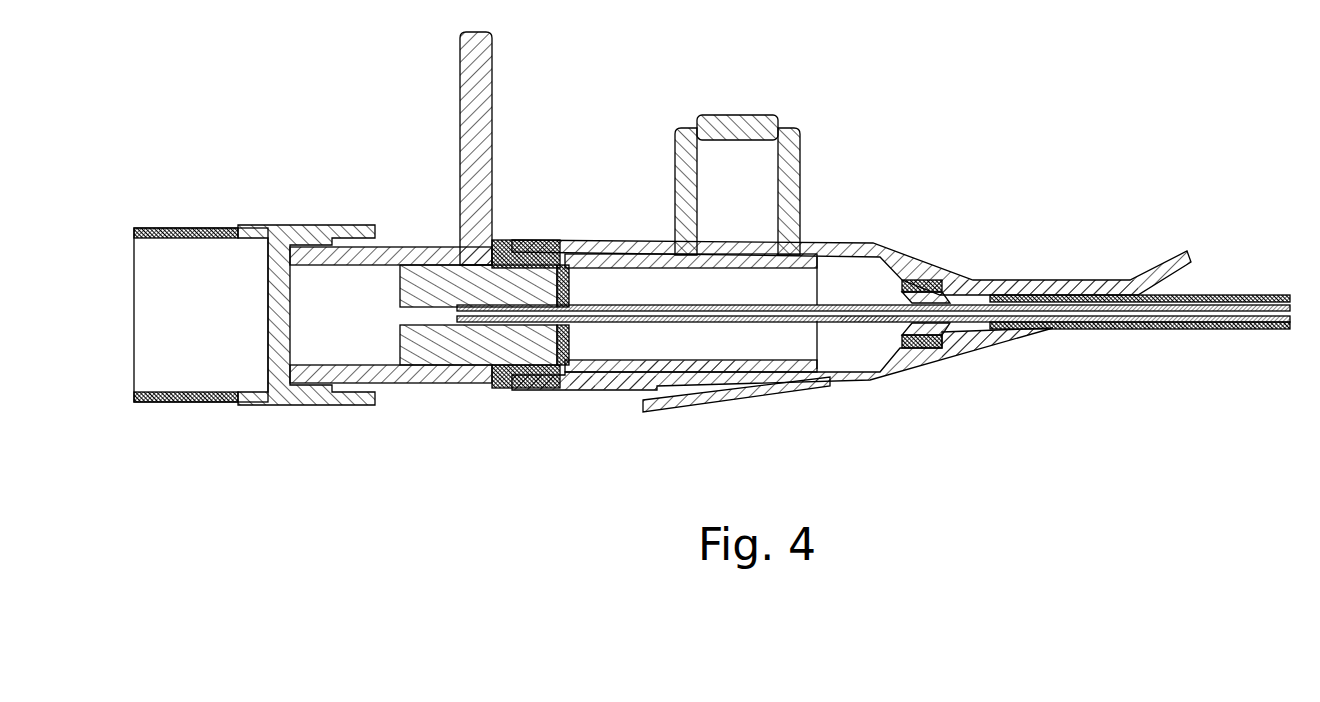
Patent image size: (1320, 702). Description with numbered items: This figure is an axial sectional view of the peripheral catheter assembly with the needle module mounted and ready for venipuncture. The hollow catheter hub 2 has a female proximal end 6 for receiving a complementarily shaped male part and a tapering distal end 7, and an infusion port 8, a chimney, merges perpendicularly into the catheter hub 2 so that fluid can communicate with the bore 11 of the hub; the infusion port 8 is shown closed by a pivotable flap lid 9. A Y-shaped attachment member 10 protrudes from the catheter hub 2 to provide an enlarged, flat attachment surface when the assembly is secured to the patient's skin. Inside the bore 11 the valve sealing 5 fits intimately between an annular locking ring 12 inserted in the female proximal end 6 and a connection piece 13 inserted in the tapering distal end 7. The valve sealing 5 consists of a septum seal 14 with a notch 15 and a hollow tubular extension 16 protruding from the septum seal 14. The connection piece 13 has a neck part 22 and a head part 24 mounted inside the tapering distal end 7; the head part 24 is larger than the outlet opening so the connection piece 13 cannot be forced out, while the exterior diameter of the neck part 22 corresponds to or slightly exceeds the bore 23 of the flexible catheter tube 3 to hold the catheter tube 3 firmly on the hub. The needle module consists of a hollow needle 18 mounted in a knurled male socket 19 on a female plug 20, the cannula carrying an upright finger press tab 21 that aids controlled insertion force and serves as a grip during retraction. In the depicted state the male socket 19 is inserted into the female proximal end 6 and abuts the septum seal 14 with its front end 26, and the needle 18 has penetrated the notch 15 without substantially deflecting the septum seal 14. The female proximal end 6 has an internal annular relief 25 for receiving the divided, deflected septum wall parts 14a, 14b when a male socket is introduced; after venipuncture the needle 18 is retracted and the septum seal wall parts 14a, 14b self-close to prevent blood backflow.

The catheter hub 2 is at (590, 240).
The catheter tube 3 is at (1210, 297).
The valve sealing 5 is at (755, 340).
The female proximal end 6 is at (520, 388).
The tapering distal end 7 is at (993, 282).
The infusion port 8 is at (800, 182).
The pivotable flap lid 9 is at (737, 125).
The Y-shaped attachment member 10 is at (748, 396).
The bore 11 is at (848, 282).
The annular locking ring 12 is at (508, 240).
The connection piece 13 is at (927, 353).
The septum seal 14 is at (604, 256).
The septum wall part 14a is at (568, 296).
The septum wall part 14b is at (568, 333).
The notch 15 is at (547, 388).
The hollow tubular extension 16 is at (635, 388).
The hollow needle 18 is at (862, 323).
The knurled male socket 19 is at (437, 385).
The female plug 20 is at (300, 393).
The finger press tab 21 is at (468, 162).
The neck part 22 is at (968, 333).
The bore 23 is at (1000, 328).
The head part 24 is at (923, 277).
The internal annular relief 25 is at (593, 390).
The front end 26 is at (600, 256).